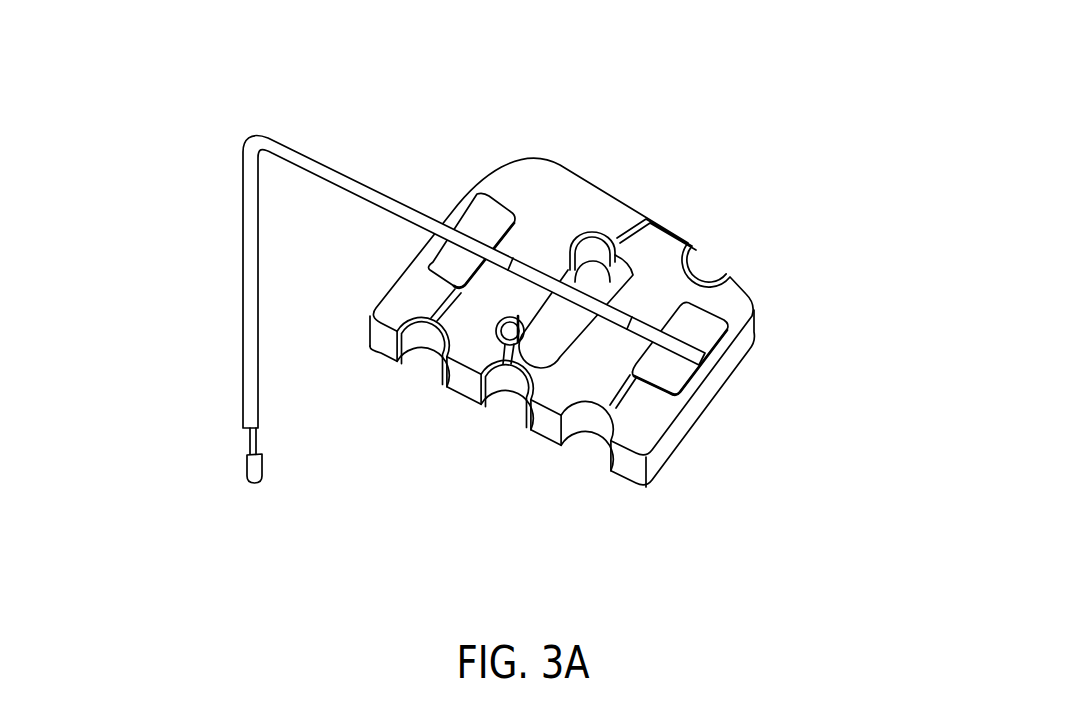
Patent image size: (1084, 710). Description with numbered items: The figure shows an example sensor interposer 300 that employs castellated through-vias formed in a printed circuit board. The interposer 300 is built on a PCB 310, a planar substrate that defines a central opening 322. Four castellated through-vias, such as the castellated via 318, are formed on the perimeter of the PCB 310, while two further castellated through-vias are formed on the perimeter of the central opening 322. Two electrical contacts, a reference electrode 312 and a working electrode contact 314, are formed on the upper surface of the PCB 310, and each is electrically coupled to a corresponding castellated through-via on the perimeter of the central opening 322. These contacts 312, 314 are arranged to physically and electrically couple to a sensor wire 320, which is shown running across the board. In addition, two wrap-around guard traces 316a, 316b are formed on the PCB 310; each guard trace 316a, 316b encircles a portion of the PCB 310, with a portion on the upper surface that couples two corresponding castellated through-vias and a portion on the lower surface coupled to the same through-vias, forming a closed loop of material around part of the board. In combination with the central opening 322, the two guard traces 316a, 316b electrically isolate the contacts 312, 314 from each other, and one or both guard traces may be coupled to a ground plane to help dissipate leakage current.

The sensor interposer 300 is at (188, 128).
The PCB 310 is at (545, 170).
The electrical contact 312 is at (483, 212).
The electrical contact 314 is at (725, 320).
The wrap-around guard trace 316a is at (712, 267).
The wrap-around guard trace 316b is at (488, 412).
The castellated via 318 is at (402, 367).
The sensor wire 320 is at (238, 273).
The central opening 322 is at (548, 325).